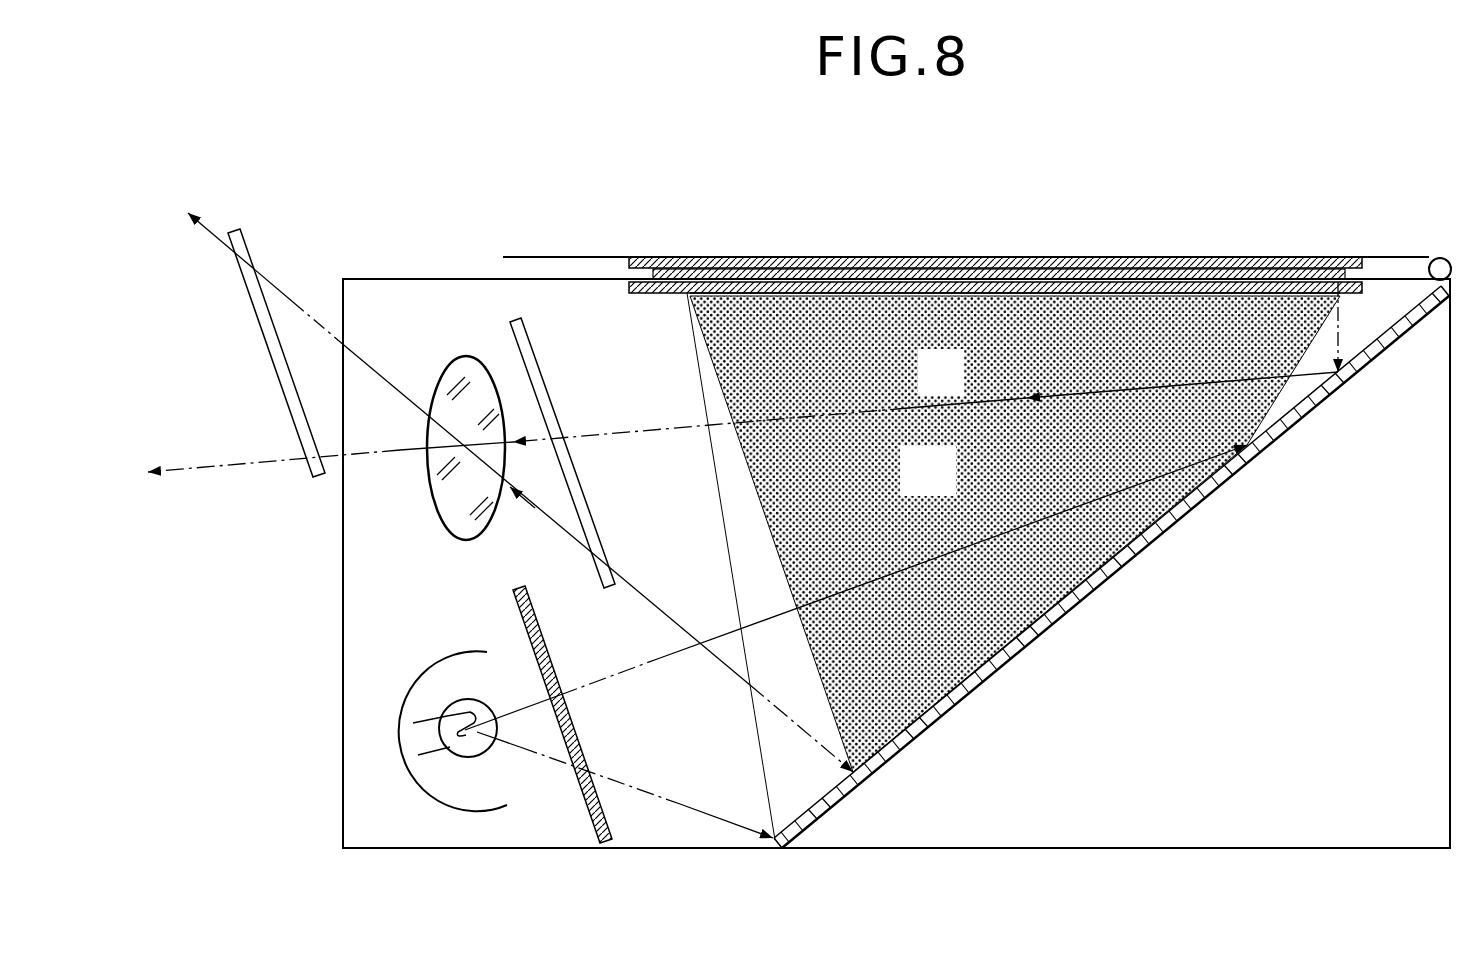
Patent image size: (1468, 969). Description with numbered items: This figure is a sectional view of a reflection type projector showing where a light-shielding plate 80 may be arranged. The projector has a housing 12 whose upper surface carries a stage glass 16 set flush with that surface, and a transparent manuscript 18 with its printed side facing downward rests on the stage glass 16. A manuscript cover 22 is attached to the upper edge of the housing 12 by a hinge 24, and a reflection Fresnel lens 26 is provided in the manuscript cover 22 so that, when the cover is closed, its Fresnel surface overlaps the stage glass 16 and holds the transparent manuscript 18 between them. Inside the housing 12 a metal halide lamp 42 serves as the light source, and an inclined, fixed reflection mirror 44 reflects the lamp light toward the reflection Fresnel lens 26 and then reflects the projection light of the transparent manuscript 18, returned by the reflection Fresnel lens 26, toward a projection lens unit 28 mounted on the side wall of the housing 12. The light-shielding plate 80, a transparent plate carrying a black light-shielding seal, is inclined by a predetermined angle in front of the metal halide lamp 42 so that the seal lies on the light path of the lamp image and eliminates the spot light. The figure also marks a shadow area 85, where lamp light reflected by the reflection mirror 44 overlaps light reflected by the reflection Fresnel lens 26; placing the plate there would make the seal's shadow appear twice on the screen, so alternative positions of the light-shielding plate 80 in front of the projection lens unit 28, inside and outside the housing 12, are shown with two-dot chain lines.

The housing 12 is at (392, 279).
The stage glass 16 is at (958, 297).
The transparent manuscript 18 is at (1025, 269).
The manuscript cover 22 is at (585, 256).
The hinge 24 is at (1440, 258).
The reflection Fresnel lens 26 is at (825, 257).
The projection lens unit 28 is at (470, 357).
The metal halide lamp 42 is at (490, 757).
The reflection mirror 44 is at (1032, 640).
The light-shielding plate 80 is at (267, 343).
The shadow area 85 is at (952, 491).